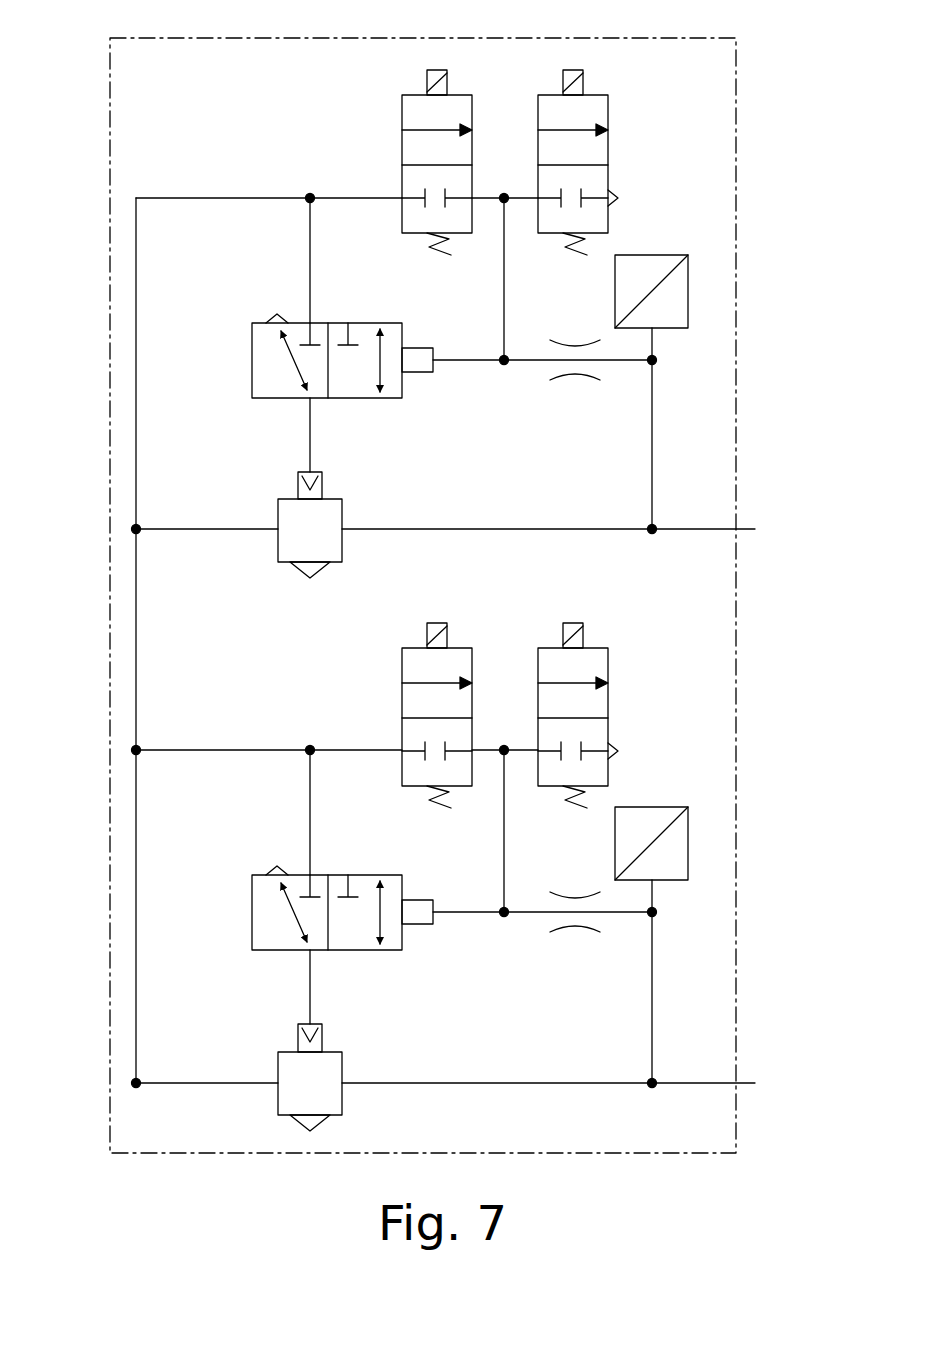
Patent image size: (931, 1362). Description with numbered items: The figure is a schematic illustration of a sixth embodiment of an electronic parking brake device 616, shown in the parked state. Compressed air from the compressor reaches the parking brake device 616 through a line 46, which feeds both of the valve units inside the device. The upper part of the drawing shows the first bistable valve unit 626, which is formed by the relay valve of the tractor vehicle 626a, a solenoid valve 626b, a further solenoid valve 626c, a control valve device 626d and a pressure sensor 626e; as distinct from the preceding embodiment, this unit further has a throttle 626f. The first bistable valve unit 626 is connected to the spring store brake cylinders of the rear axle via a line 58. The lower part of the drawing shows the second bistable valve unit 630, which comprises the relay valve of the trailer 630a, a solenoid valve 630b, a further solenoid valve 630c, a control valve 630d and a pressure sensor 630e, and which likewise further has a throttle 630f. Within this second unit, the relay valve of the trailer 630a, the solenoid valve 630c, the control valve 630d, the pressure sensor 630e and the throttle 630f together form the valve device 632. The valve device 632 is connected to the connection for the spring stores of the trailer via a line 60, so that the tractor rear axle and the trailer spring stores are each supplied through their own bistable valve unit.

The line 46 is at (110, 750).
The line 58 is at (745, 529).
The line 60 is at (745, 1083).
The electronic parking brake device 616 is at (454, 595).
The first bistable valve unit 626 is at (467, 324).
The second bistable valve unit 630 is at (484, 705).
The valve device 632 is at (773, 408).
The relay valve of the tractor vehicle 626a is at (325, 515).
The solenoid valve 626b is at (402, 115).
The further solenoid valve 626c is at (608, 113).
The control valve device 626d is at (337, 323).
The pressure sensor 626e is at (650, 255).
The throttle 626f is at (581, 378).
The relay valve of the trailer 630a is at (278, 1072).
The solenoid valve 630b is at (402, 667).
The further solenoid valve 630c is at (592, 648).
The control valve 630d is at (372, 950).
The pressure sensor 630e is at (665, 807).
The throttle 630f is at (578, 930).